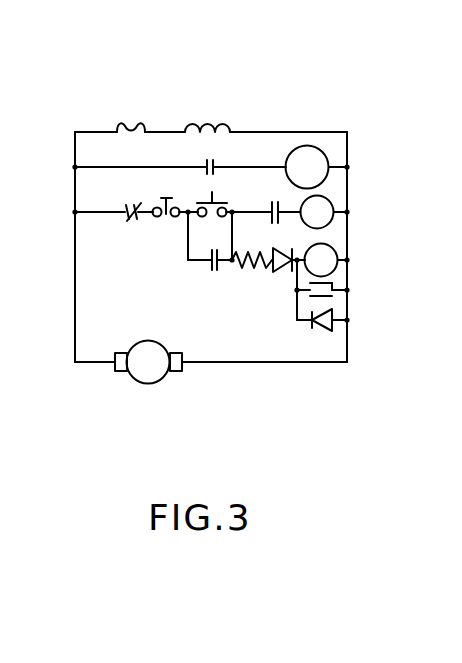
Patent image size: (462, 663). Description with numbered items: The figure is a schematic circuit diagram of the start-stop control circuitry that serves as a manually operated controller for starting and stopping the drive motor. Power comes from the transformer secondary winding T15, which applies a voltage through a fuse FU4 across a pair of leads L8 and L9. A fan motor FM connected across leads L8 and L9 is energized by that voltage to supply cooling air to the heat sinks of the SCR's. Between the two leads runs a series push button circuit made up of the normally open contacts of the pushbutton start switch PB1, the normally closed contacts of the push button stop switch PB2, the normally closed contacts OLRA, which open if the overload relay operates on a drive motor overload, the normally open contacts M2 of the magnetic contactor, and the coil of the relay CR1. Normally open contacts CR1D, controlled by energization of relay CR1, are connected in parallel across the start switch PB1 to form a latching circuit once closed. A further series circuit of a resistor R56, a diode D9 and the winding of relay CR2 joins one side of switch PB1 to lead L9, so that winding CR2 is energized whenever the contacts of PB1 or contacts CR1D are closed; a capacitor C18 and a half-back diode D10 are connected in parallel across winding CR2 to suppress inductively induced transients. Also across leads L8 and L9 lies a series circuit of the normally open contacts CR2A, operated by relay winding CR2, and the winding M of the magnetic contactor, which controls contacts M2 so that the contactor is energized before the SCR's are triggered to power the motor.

The fuse FU4 is at (121, 130).
The secondary winding T15 is at (221, 128).
The normally open contacts CR2A is at (208, 158).
The winding of the magnetic contactor M is at (293, 152).
The normally closed contacts OLRA is at (132, 223).
The push button stop switch PB2 is at (161, 220).
The pushbutton start switch PB1 is at (205, 218).
The normally open contacts M2 is at (279, 197).
The relay coil CR1 is at (331, 201).
The lead L9 is at (350, 231).
The lead L8 is at (75, 287).
The normally open contacts CR1D is at (217, 268).
The resistor R56 is at (244, 248).
The diode D9 is at (279, 272).
The relay winding CR2 is at (350, 259).
The capacitor C18 is at (333, 298).
The half-back diode D10 is at (327, 331).
The fan motor FM is at (145, 384).